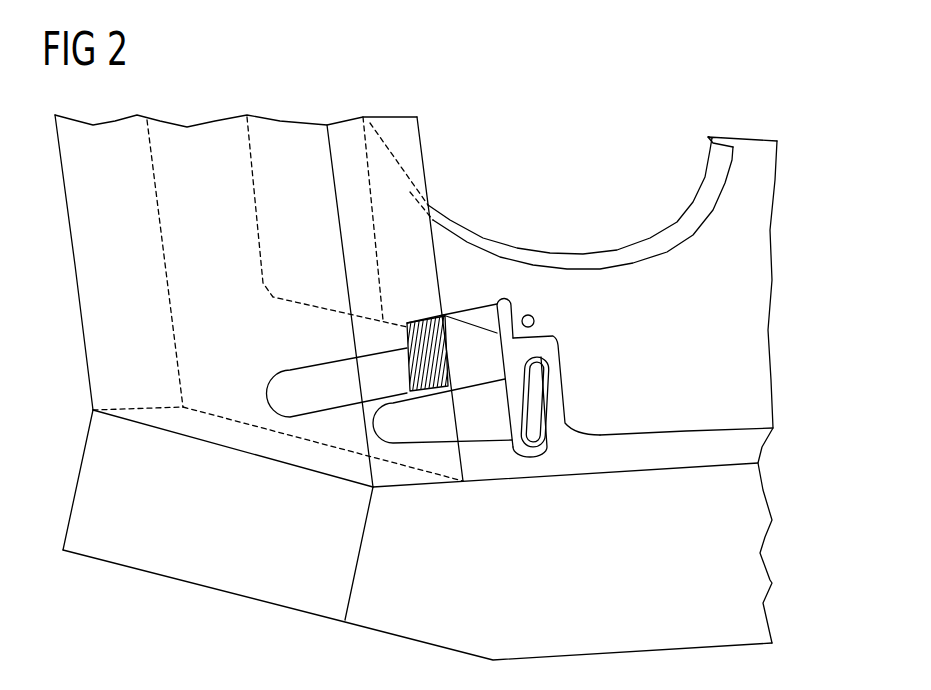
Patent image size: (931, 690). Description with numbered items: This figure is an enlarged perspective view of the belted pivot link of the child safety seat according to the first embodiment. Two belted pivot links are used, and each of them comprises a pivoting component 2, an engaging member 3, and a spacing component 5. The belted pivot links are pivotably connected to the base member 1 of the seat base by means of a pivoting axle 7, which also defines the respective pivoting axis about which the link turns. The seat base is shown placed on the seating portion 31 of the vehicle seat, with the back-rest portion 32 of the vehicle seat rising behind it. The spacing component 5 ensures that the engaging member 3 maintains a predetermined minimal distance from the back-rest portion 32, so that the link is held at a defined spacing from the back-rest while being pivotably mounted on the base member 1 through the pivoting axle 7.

The base member 1 is at (683, 223).
The pivoting component 2 is at (556, 347).
The engaging member 3 is at (549, 392).
The spacing component 5 is at (472, 412).
The pivoting axle 7 is at (537, 318).
The seating portion 31 is at (752, 536).
The back-rest portion 32 is at (108, 354).